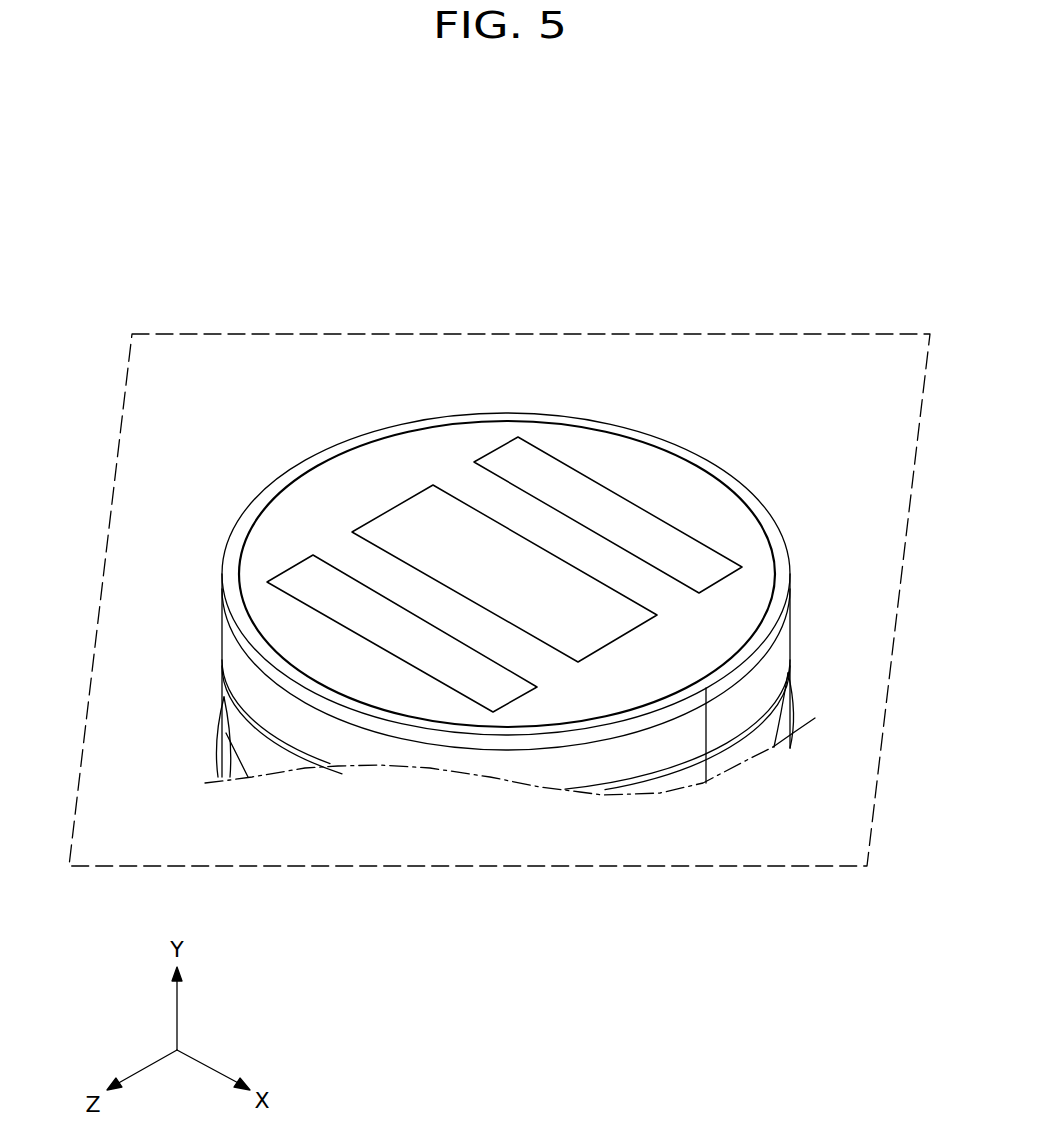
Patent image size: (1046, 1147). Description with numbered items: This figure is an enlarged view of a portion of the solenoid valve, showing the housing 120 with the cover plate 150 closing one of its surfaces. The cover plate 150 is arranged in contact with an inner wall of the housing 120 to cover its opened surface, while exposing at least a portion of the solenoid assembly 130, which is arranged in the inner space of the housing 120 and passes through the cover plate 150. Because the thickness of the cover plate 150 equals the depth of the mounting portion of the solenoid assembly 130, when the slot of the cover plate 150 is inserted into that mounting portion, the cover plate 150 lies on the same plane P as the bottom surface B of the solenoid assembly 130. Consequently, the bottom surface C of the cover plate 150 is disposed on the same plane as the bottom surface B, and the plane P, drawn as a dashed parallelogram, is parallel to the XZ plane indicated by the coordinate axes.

The plane P is at (540, 336).
The housing 120 is at (237, 652).
The cover plate 150 is at (357, 473).
The solenoid assembly 130 is at (507, 458).
The bottom surface of the solenoid assembly B is at (585, 502).
The bottom surface of the cover plate C is at (698, 507).